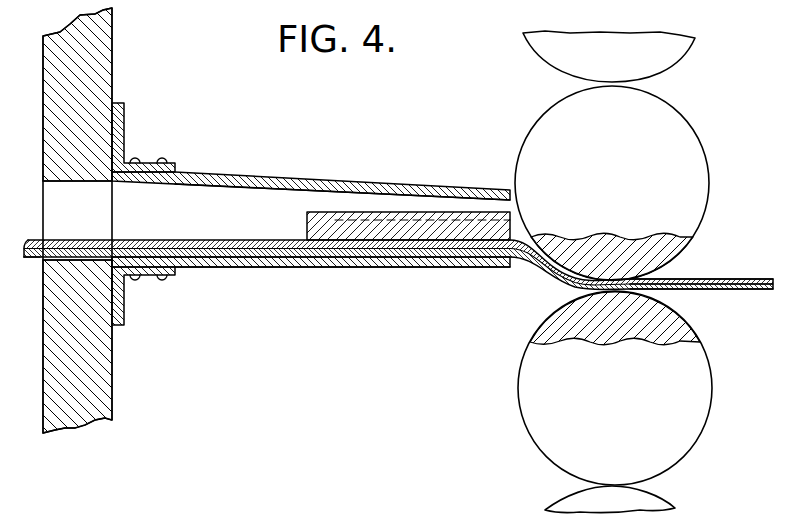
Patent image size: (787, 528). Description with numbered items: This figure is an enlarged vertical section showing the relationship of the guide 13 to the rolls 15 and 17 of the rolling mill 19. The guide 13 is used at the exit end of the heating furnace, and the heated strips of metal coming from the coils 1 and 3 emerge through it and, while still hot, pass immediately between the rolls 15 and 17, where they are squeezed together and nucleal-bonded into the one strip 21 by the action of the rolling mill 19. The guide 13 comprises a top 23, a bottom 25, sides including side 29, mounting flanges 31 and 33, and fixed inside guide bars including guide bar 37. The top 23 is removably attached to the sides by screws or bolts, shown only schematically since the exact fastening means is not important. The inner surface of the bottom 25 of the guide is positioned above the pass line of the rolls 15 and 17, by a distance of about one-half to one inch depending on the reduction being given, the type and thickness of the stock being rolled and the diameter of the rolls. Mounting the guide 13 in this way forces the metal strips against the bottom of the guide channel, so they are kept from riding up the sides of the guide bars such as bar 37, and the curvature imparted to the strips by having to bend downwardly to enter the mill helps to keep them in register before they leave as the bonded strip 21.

The coil 1 is at (143, 240).
The coil 3 is at (38, 258).
The guide member 13 is at (280, 268).
The roll 15 is at (690, 206).
The roll 17 is at (682, 326).
The rolling mill 19 is at (502, 400).
The bonded strip 21 is at (716, 278).
The top 23 is at (298, 179).
The bottom 25 is at (258, 267).
The side 29 is at (247, 208).
The mounting flange 31 is at (124, 124).
The mounting flange 33 is at (125, 300).
The inside guide bar 37 is at (417, 205).